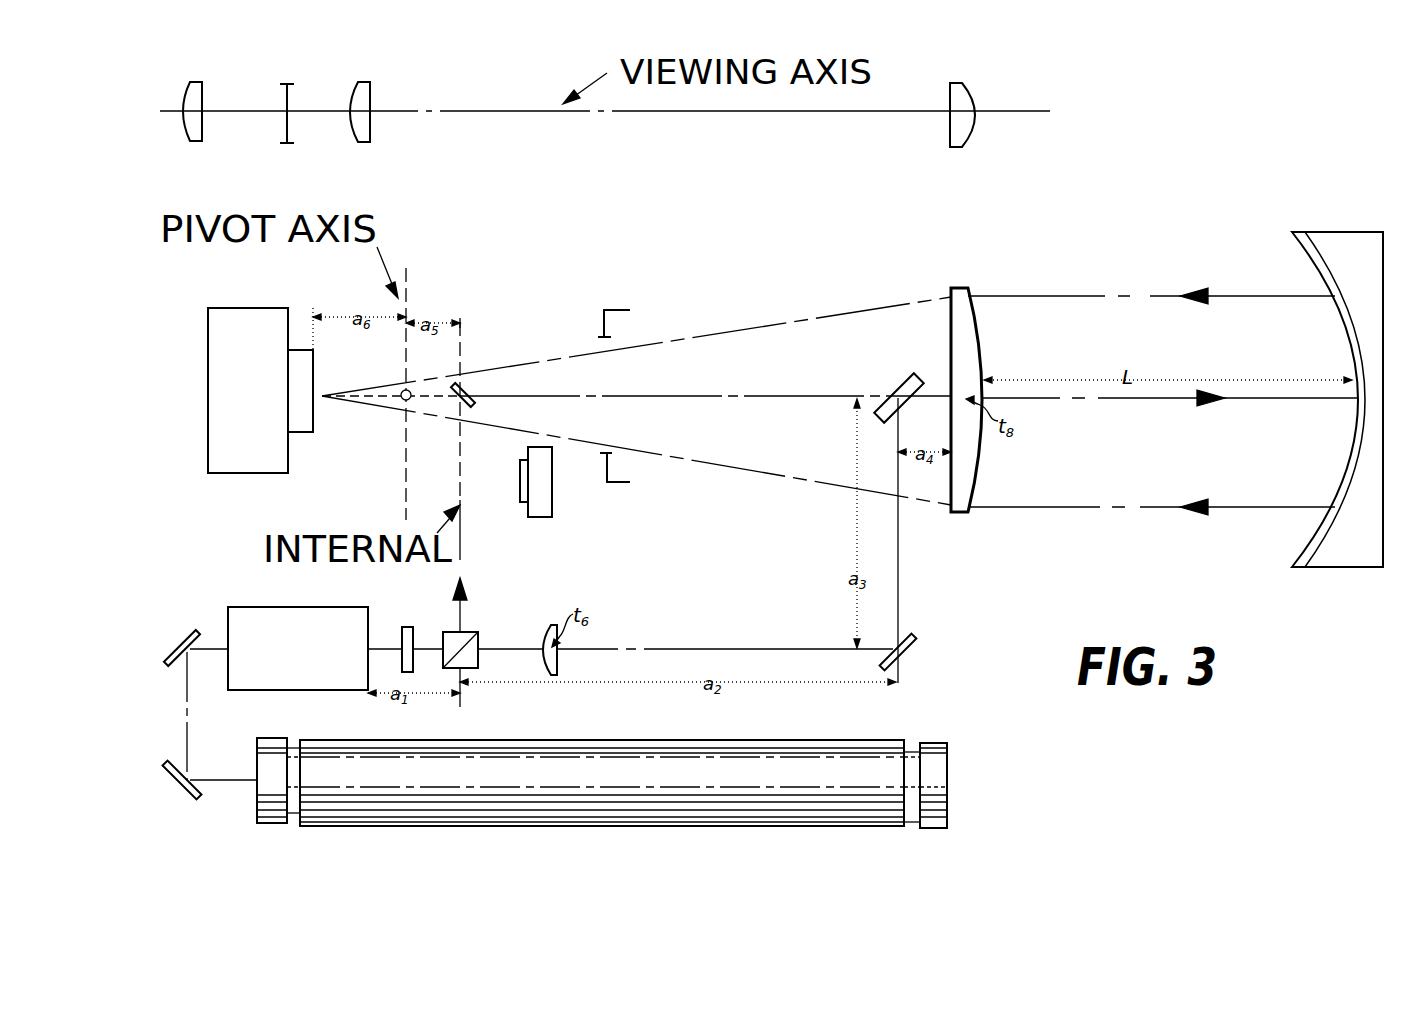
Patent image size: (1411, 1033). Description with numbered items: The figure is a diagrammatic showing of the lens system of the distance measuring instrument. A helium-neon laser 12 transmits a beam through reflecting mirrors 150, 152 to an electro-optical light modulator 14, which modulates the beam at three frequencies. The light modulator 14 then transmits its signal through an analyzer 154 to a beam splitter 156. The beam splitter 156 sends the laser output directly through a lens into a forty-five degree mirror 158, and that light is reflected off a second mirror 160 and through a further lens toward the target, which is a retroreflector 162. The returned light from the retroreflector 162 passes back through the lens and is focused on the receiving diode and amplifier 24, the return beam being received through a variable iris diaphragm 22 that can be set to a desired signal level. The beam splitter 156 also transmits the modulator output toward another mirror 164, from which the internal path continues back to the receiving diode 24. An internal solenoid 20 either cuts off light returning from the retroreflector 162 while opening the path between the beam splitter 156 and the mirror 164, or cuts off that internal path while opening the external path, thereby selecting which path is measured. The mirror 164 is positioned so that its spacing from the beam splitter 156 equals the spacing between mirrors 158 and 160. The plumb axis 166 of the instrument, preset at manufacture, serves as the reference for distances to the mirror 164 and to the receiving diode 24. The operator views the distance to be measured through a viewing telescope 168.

The helium-neon laser 12 is at (735, 742).
The electro-optical light modulator 14 is at (262, 607).
The internal solenoid 20 is at (552, 495).
The iris diaphragm 22 is at (605, 327).
The receiving diode and amplifier 24 is at (313, 372).
The reflecting mirror 150 is at (172, 782).
The reflecting mirror 152 is at (186, 636).
The analyzer 154 is at (408, 627).
The beam splitter 156 is at (478, 638).
The 45° mirror 158 is at (905, 656).
The second mirror 160 is at (910, 376).
The retroreflector 162 is at (1337, 232).
The mirror 164 is at (464, 389).
The plumb axis 166 is at (401, 401).
The viewing telescope 168 is at (455, 96).